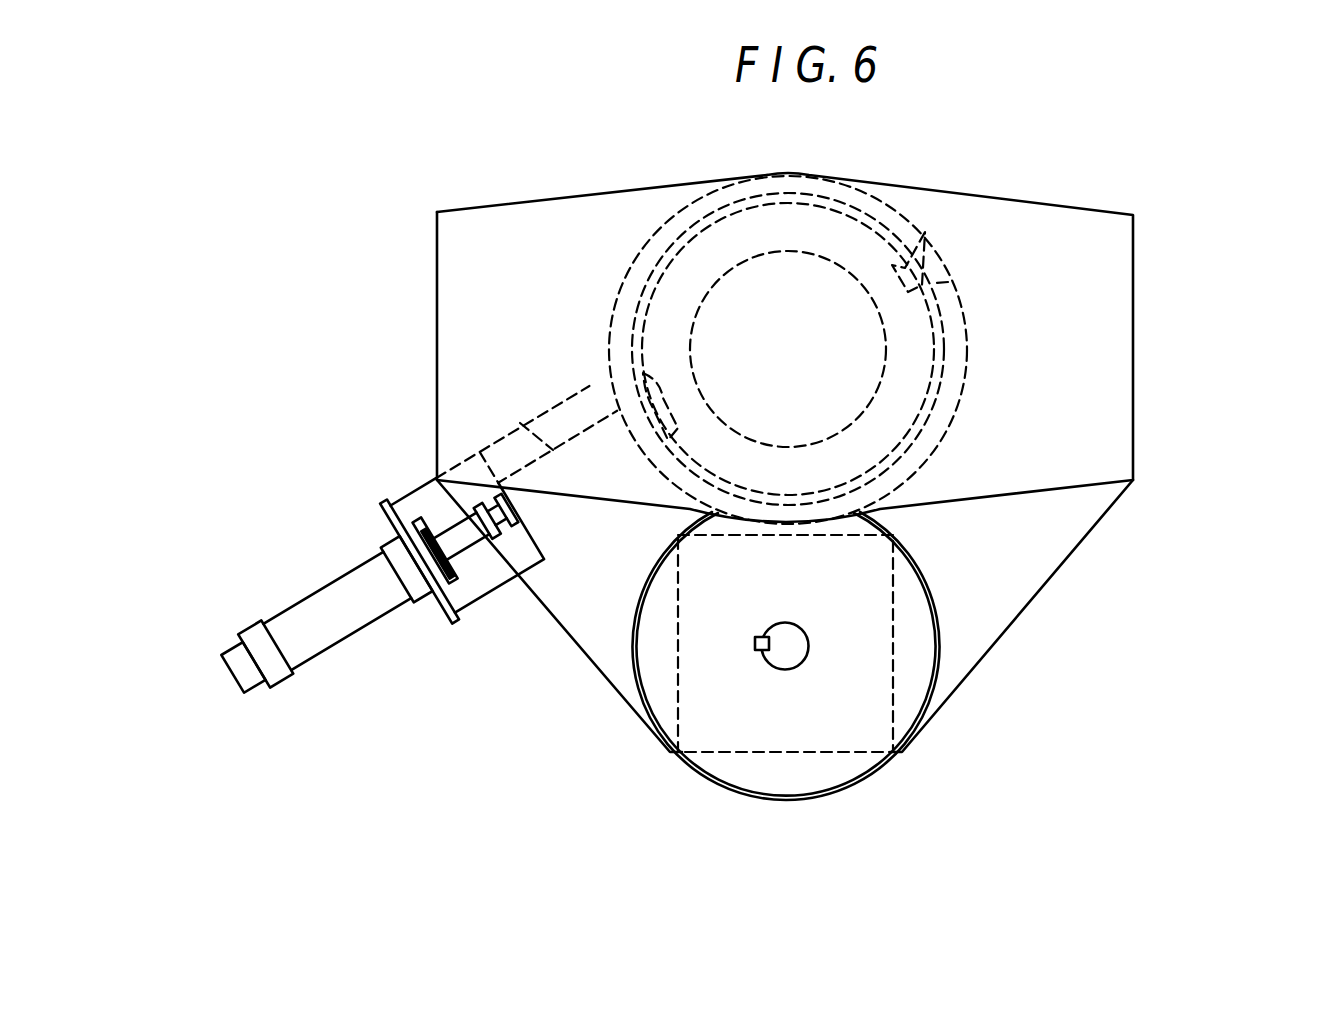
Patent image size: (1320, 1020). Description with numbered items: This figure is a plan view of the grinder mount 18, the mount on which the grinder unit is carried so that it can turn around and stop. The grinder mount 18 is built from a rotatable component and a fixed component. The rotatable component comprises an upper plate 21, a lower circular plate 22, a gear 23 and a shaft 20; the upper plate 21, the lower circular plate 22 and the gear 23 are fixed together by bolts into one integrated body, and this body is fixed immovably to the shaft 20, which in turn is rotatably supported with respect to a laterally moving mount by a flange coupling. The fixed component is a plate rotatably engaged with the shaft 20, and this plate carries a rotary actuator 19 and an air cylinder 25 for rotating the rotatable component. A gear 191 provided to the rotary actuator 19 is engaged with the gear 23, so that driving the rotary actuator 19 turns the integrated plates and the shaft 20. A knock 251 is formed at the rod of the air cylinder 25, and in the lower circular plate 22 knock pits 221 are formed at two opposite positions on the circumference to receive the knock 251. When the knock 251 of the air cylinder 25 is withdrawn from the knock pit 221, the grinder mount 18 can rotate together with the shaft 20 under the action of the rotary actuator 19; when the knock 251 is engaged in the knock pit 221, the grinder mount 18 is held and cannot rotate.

The grinder mount 18 is at (1058, 182).
The rotary actuator 19 is at (727, 740).
The gear 191 is at (938, 657).
The shaft 20 is at (702, 303).
The upper plate 21 is at (487, 207).
The lower circular plate 22 is at (882, 198).
The knock pit 221 is at (952, 282).
The gear 23 is at (947, 343).
The air cylinder 25 is at (340, 636).
The knock 251 is at (530, 423).